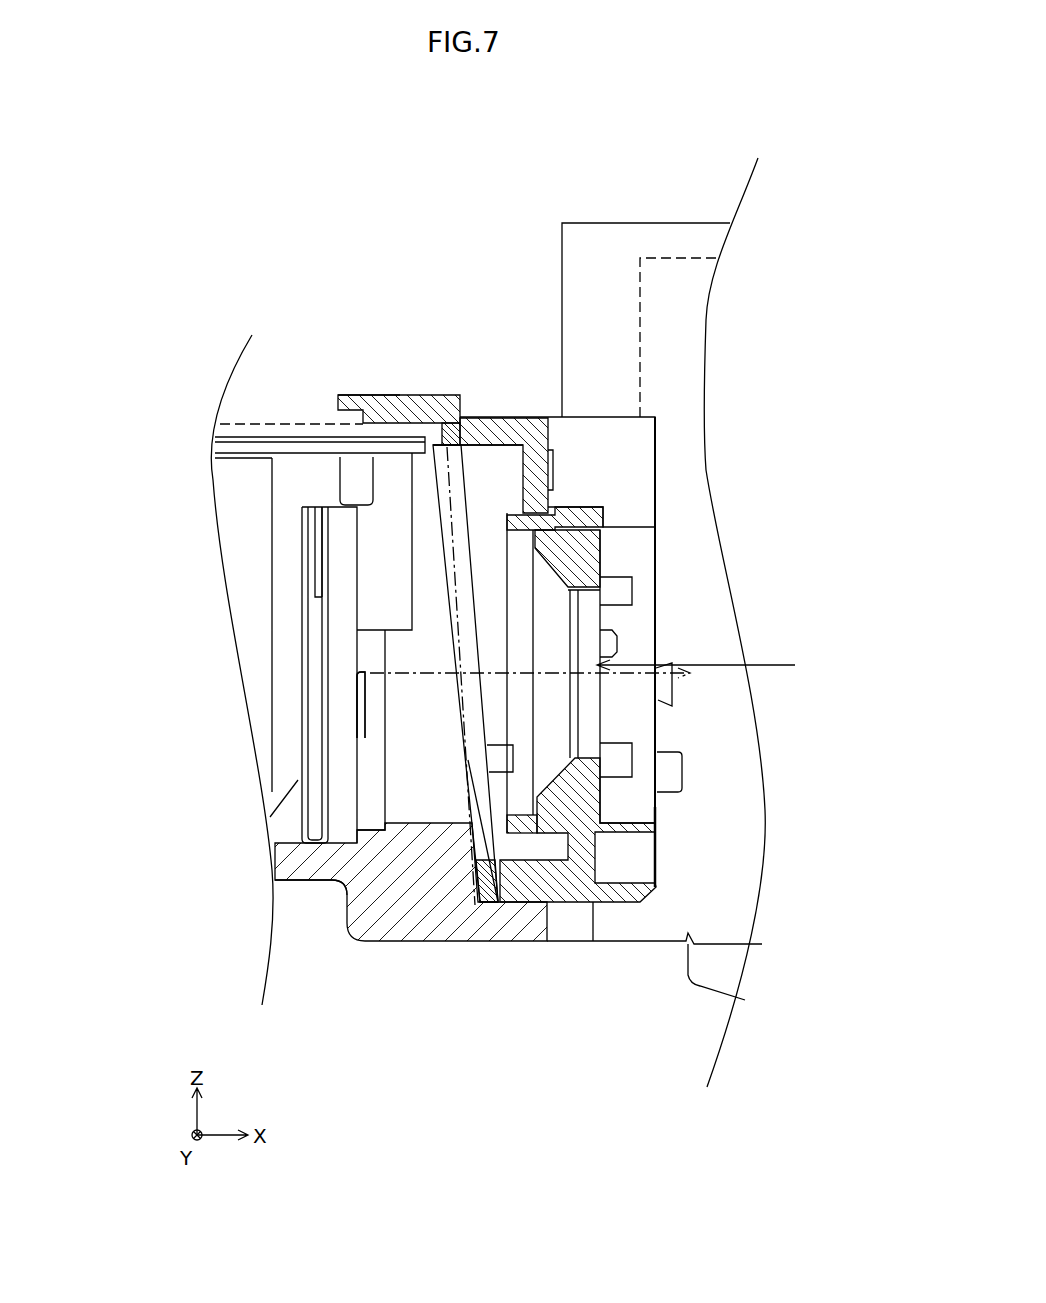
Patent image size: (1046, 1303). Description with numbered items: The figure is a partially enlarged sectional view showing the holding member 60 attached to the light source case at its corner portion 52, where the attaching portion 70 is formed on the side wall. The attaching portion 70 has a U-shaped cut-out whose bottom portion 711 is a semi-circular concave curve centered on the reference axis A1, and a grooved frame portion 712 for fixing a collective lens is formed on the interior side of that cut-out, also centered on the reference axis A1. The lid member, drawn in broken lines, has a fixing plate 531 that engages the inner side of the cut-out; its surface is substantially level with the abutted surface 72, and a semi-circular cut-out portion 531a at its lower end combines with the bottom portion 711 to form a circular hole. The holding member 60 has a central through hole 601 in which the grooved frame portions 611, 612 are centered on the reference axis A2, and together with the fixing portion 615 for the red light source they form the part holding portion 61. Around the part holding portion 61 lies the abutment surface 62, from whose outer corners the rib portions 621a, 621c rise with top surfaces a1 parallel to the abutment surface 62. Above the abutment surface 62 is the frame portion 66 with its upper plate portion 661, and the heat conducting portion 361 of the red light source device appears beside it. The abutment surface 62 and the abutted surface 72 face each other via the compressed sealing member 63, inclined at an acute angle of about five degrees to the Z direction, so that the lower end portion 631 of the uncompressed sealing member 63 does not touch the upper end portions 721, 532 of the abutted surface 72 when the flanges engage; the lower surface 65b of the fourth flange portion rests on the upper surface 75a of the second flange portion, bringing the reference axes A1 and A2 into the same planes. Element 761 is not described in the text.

The heat conducting portion 361 is at (677, 252).
The holding member 60 is at (505, 404).
The frame portion 66 is at (395, 383).
The upper plate portion 661 is at (380, 393).
The rib portion 621a is at (452, 425).
The upper end portion of the abutted surface 721 is at (443, 425).
The upper end portion of the abutted surface 532 is at (443, 425).
The corner portion 52 is at (312, 423).
The abutted surface 72 is at (390, 792).
The fixing plate 531 is at (418, 515).
The cut-out portion 531a is at (437, 530).
The lower surface of the fourth flange portion 65b is at (433, 700).
The upper surface of the second flange portion 75a is at (433, 700).
The grooved frame portion 712 is at (370, 827).
The attaching portion 70 is at (392, 956).
The bottom portion 711 is at (387, 862).
The lower bracket 761 is at (530, 930).
The abutment surface 62 is at (455, 693).
The top surface a1 is at (440, 430).
The sealing member 63 is at (477, 737).
The rib portion 621c is at (494, 905).
The lower end portion of the sealing member 631 is at (490, 905).
The grooved frame portion 612 is at (528, 548).
The grooved frame portion 611 is at (590, 597).
The part holding portion 61 is at (637, 623).
The fixing portion 615 is at (637, 645).
The through hole 601 is at (720, 670).
The reference axis A1 is at (530, 663).
The reference axis A2 is at (684, 685).